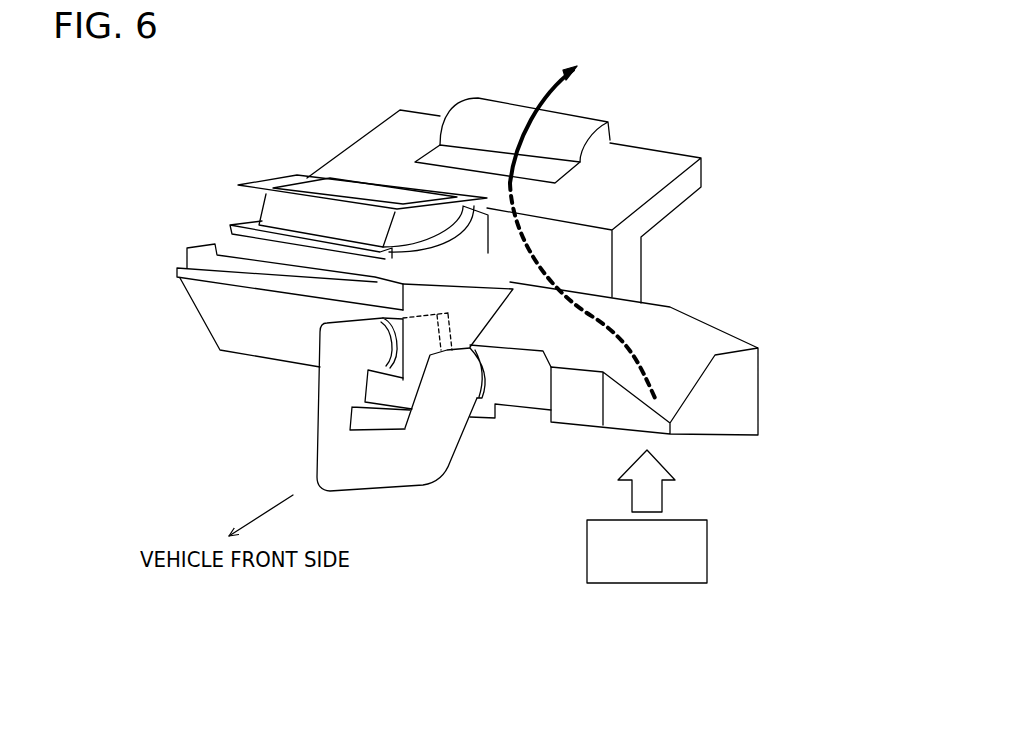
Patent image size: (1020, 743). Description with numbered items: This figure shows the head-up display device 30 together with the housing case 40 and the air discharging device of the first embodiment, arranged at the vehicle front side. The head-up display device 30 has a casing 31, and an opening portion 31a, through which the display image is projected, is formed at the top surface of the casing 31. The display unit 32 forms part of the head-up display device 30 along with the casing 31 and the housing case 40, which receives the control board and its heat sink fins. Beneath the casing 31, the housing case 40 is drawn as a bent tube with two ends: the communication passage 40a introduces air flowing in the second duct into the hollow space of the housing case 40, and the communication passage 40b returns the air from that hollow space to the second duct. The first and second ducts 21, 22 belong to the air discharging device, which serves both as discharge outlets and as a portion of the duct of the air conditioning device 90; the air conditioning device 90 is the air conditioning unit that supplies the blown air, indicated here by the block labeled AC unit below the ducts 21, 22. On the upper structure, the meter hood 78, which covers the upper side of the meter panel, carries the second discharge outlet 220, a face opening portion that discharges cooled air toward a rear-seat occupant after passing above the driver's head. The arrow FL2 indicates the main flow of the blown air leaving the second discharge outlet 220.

The head-up display device 30 is at (253, 165).
The casing 31 is at (220, 237).
The opening portion 31a is at (345, 192).
The display unit 32 is at (366, 421).
The housing case 40 is at (318, 415).
The communication passage 40a is at (485, 399).
The communication passage 40b is at (377, 318).
The meter hood 78 is at (485, 118).
The second discharge outlet 220 is at (466, 146).
The arrow indicating main flow of blown air from the second discharge outlet FL2 is at (543, 95).
The duct 21, 22 is at (762, 393).
The air conditioning device 90 is at (707, 552).